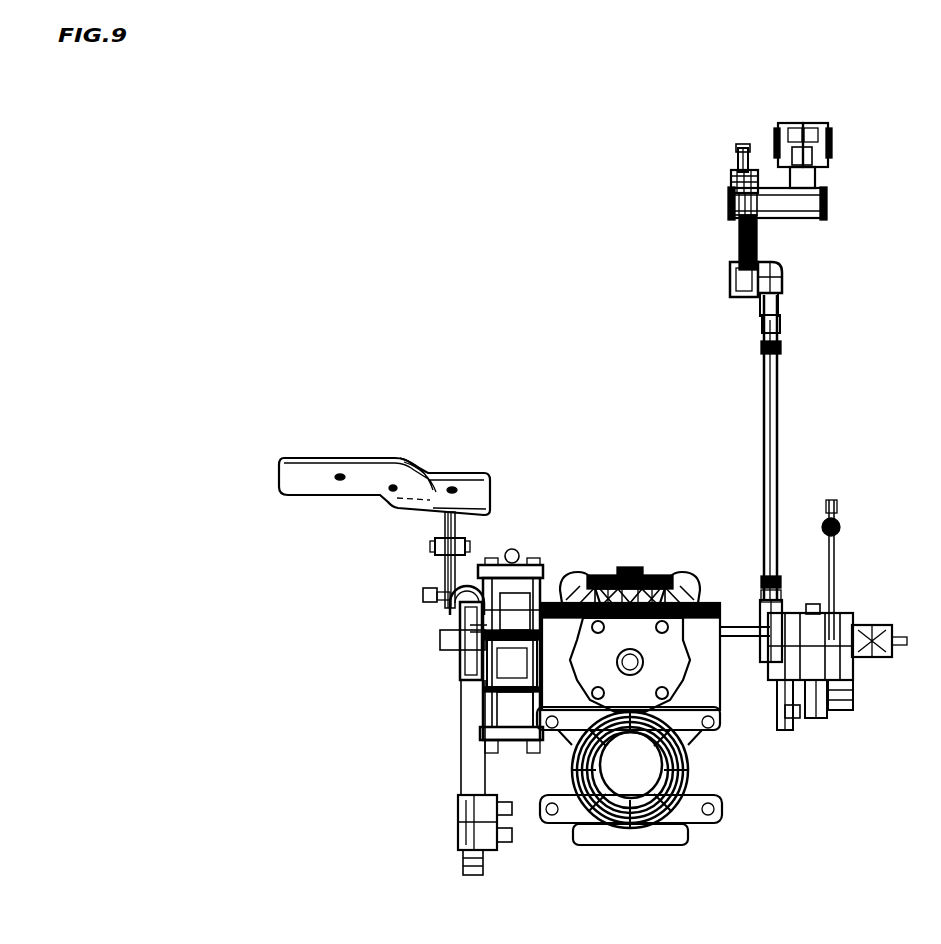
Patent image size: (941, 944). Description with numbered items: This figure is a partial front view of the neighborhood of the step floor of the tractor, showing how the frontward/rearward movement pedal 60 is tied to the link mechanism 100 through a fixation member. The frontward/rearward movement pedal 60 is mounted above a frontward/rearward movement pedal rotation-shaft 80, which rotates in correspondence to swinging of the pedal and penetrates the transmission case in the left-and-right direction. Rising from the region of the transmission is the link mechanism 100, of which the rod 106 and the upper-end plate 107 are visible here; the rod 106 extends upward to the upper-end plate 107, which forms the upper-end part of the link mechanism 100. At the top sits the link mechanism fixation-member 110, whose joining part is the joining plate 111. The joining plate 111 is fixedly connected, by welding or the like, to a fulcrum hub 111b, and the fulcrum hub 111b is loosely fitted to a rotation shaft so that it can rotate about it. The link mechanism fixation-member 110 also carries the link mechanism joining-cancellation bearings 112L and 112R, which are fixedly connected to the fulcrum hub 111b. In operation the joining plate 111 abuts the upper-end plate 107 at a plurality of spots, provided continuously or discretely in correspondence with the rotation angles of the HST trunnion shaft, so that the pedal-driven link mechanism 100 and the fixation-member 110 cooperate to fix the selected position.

The frontward/rearward movement pedal 60 is at (297, 456).
The frontward/rearward movement pedal rotation-shaft 80 is at (742, 611).
The link mechanism 100 is at (697, 335).
The rod 106 is at (766, 418).
The upper-end plate 107 is at (757, 252).
The link mechanism fixation-member 110 is at (712, 174).
The joining plate 111 is at (740, 157).
The fulcrum hub 111b is at (767, 182).
The link mechanism joining-cancellation bearing 112R is at (784, 126).
The link mechanism joining-cancellation bearing 112L is at (820, 125).